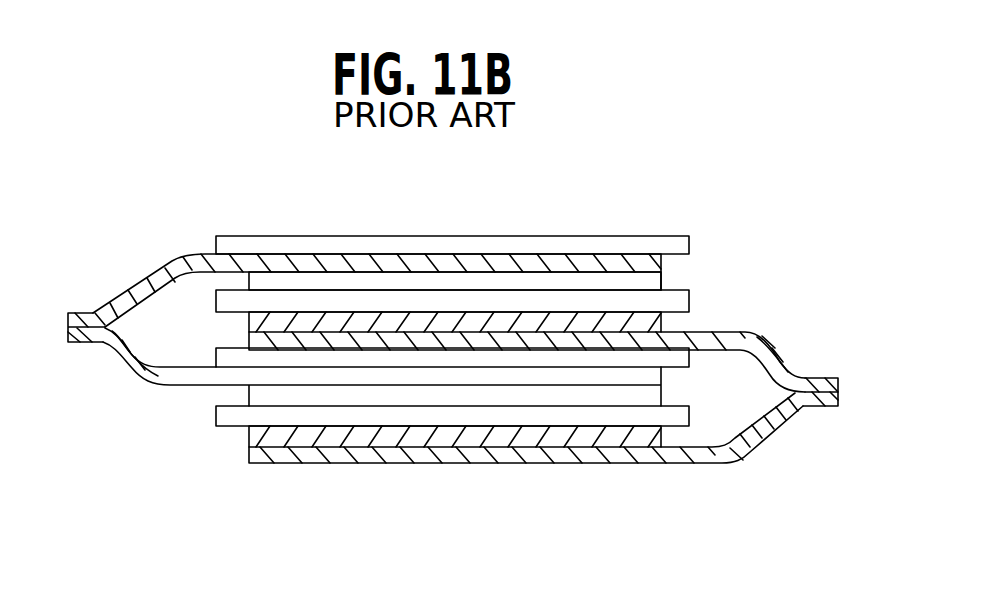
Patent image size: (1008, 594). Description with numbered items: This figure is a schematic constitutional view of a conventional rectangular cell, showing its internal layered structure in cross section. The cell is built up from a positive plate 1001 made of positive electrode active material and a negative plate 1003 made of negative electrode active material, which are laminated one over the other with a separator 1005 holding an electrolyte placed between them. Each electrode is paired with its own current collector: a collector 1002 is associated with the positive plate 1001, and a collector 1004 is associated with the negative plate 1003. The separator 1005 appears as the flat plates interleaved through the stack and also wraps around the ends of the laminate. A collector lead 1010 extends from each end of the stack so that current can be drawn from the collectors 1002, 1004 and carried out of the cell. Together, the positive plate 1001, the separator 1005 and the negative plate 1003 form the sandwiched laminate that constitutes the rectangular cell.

The positive plate 1001 is at (653, 287).
The collector 1002 is at (552, 255).
The negative plate 1003 is at (652, 327).
The collector 1004 is at (572, 463).
The separator 1005 is at (422, 243).
The collector lead 1010 is at (142, 373).